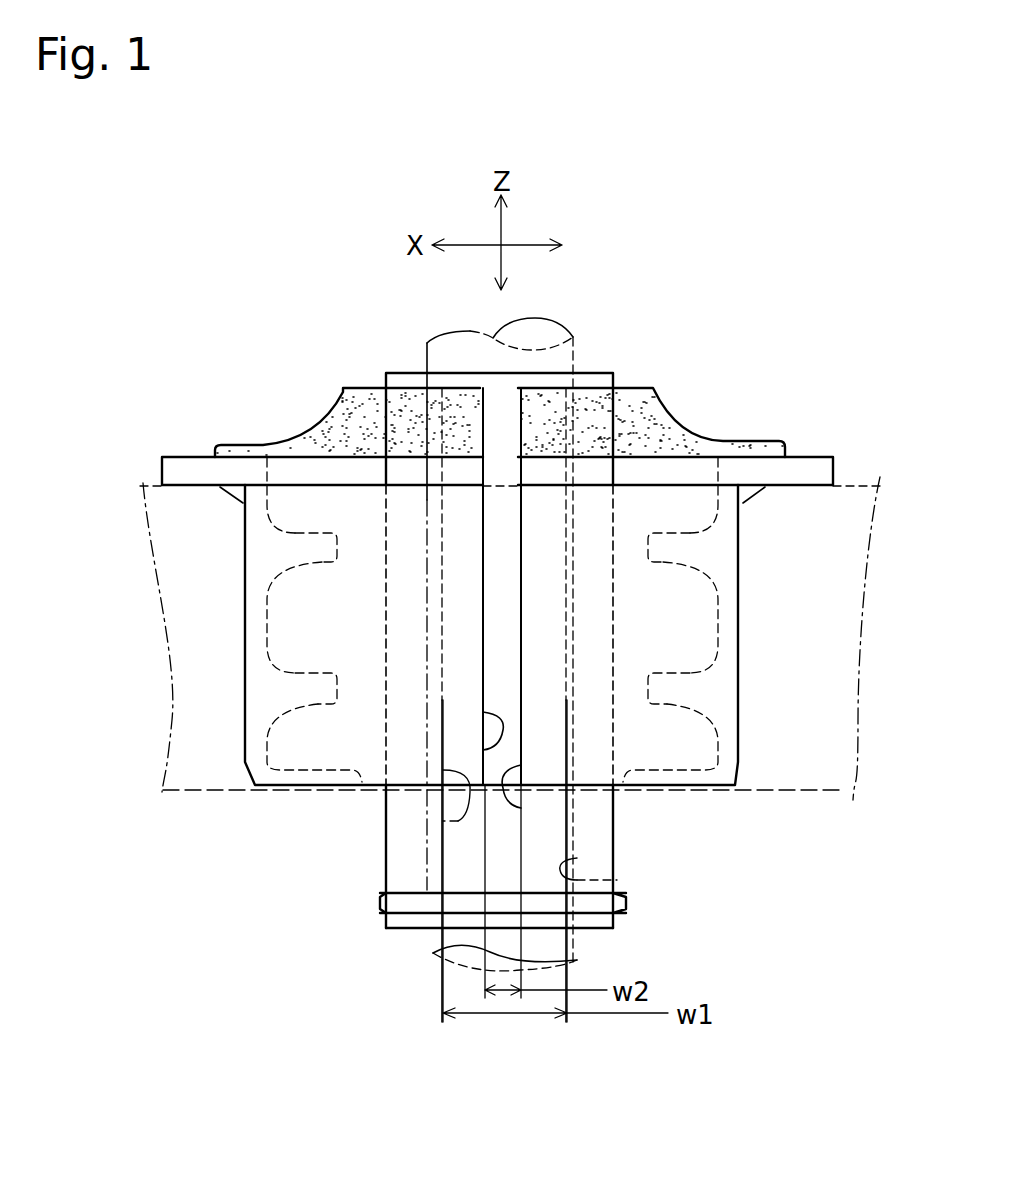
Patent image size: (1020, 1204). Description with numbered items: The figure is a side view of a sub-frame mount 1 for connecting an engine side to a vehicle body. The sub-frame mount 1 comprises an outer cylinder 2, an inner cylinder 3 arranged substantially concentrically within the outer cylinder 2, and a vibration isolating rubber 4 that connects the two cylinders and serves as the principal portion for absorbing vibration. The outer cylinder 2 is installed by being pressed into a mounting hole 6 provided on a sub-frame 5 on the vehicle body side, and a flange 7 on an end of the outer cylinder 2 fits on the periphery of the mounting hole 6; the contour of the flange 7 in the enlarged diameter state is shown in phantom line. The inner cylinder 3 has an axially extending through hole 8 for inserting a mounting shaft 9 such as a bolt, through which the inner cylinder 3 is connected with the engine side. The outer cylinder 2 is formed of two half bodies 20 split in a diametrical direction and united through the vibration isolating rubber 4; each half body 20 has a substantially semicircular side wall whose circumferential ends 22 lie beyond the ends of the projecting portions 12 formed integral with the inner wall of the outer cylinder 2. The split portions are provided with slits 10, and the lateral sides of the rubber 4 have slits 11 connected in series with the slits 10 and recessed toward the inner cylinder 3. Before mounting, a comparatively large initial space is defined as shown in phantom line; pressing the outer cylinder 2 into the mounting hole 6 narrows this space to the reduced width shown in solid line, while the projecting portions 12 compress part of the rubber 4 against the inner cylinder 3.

The sub-frame mount 1 is at (216, 362).
The outer cylinder 2 is at (231, 548).
The inner cylinder 3 is at (400, 870).
The vibration isolating rubber 4 is at (320, 436).
The sub-frame 5 is at (193, 737).
The mounting hole 6 is at (222, 792).
The flange 7 is at (162, 473).
The through hole 8 is at (617, 880).
The mounting shaft 9 is at (540, 335).
The slit 10 is at (490, 470).
The slit 11 is at (492, 400).
The projecting portion 12 is at (278, 585).
The half body 20 is at (247, 650).
The circumferential end 22 is at (500, 742).